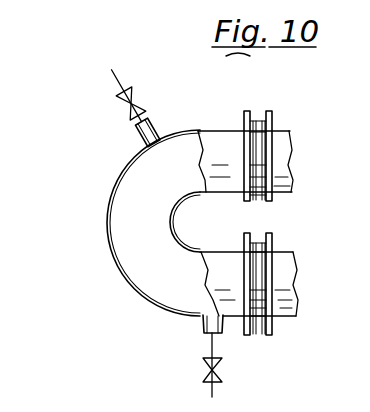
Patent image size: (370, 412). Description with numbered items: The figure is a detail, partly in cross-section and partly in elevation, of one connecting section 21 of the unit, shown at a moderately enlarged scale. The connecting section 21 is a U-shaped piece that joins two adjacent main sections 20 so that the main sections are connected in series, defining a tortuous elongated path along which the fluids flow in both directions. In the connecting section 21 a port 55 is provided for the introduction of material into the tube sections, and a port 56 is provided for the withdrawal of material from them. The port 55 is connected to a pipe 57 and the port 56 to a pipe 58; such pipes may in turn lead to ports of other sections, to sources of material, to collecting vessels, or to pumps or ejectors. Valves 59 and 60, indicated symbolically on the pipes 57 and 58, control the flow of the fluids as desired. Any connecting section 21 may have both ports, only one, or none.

The main section 20 is at (280, 133).
The connecting section 21 is at (132, 227).
The port 55 is at (158, 137).
The port 56 is at (203, 320).
The pipe 57 is at (138, 138).
The pipe 58 is at (222, 322).
The valve 59 is at (116, 106).
The valve 60 is at (205, 369).